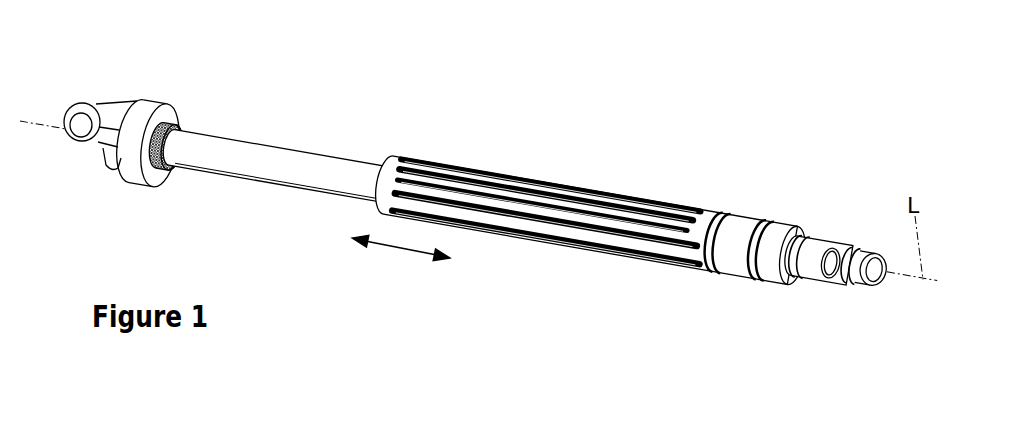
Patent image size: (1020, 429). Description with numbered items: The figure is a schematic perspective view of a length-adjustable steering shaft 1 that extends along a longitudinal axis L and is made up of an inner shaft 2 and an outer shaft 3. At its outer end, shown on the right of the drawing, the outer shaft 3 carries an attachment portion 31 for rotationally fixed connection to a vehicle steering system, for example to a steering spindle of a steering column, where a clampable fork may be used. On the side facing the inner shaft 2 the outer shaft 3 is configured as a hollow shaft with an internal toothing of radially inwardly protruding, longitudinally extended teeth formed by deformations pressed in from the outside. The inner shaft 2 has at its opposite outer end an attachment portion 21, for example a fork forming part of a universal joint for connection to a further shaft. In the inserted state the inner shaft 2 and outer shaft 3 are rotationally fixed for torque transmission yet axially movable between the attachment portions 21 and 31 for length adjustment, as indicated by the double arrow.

The steering shaft 1 is at (511, 65).
The inner shaft 2 is at (268, 168).
The attachment portion 21 is at (117, 113).
The outer shaft 3 is at (710, 225).
The attachment portion 31 is at (857, 257).